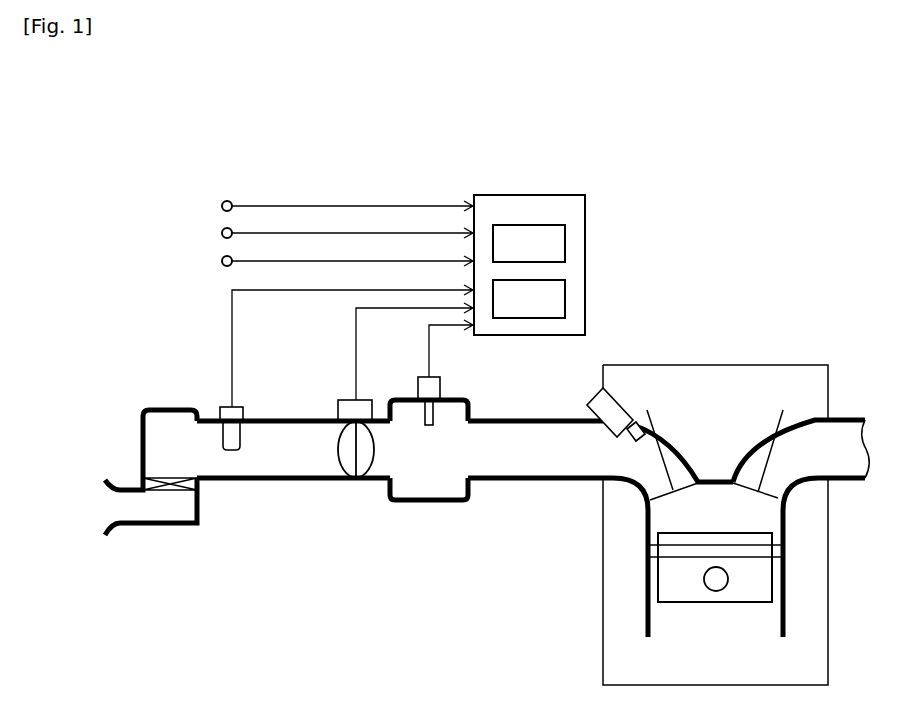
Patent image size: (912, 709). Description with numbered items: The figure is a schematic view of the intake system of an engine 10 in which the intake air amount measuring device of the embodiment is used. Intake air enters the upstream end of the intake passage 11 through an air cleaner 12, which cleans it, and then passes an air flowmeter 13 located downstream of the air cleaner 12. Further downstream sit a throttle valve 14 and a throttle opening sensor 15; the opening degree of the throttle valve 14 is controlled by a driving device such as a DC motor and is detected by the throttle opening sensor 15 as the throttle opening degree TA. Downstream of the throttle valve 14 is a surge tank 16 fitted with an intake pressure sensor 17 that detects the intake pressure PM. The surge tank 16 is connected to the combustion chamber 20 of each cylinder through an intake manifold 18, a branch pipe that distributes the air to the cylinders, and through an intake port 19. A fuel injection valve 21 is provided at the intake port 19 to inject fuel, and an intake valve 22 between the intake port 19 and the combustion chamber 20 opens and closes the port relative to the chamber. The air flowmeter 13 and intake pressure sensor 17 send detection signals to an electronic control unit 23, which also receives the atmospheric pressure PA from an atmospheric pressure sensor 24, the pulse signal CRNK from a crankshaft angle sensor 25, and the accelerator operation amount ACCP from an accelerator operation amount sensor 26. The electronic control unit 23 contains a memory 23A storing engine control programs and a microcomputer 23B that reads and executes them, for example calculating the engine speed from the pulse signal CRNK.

The engine 10 is at (715, 364).
The intake passage 11 is at (300, 482).
The air cleaner 12 is at (169, 493).
The air flowmeter 13 is at (221, 432).
The throttle valve 14 is at (372, 452).
The throttle opening sensor 15 is at (338, 410).
The surge tank 16 is at (428, 500).
The intake pressure sensor 17 is at (441, 390).
The intake manifold 18 is at (537, 473).
The intake port 19 is at (640, 472).
The combustion chamber 20 is at (752, 512).
The fuel injection valve 21 is at (613, 392).
The intake valve 22 is at (670, 462).
The electronic control unit 23 is at (557, 289).
The memory 23A is at (565, 243).
The microcomputer 23B is at (565, 298).
The atmospheric pressure sensor 24 is at (221, 206).
The crankshaft angle sensor 25 is at (221, 233).
The accelerator operation amount sensor 26 is at (221, 261).